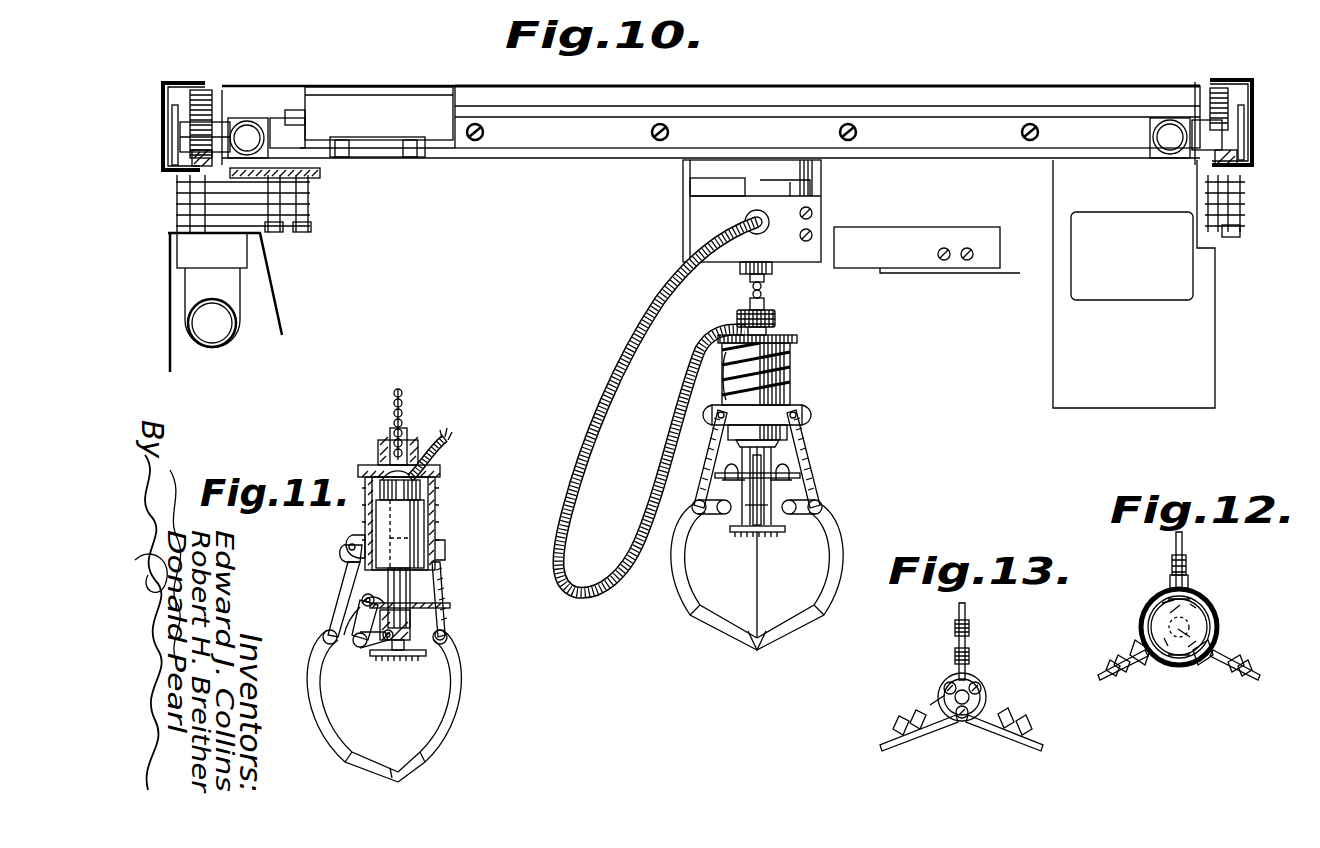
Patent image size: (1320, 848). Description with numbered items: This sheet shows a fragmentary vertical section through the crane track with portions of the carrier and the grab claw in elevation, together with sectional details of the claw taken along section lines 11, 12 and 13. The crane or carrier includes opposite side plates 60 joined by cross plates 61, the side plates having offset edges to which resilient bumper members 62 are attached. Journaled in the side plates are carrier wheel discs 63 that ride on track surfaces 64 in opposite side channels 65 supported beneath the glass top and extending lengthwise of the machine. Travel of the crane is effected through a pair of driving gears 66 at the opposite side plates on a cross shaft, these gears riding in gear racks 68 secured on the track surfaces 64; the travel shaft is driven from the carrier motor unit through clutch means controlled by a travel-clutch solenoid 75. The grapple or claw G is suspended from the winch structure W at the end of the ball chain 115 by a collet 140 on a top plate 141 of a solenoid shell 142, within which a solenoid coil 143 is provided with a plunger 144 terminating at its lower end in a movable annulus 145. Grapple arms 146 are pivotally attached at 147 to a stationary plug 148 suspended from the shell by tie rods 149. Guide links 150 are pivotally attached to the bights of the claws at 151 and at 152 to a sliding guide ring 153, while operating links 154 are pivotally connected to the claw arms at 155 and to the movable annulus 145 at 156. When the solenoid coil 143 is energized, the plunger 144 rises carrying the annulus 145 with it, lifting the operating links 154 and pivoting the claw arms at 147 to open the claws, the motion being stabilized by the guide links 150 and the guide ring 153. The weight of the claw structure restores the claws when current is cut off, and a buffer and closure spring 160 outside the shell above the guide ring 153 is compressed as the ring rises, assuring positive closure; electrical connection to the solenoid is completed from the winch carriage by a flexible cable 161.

In FIG. 10, the side plates 60 is at (232, 120).
In FIG. 10, the cross plates 61 is at (505, 150).
In FIG. 10, the resilient bumper members 62 is at (249, 136).
In FIG. 10, the carrier wheel discs 63 is at (172, 120).
In FIG. 10, the track surfaces 64 is at (175, 168).
In FIG. 10, the side channels 65 is at (163, 93).
In FIG. 10, the driving gears 66 is at (203, 90).
In FIG. 10, the gear racks 68 is at (195, 172).
In FIG. 10, the travel-clutch solenoid 75 is at (378, 147).
In FIG. 10, the ball chain 115 is at (762, 297).
In FIG. 11, the ball chain 115 is at (402, 393).
In FIG. 10, the collet 140 is at (770, 330).
In FIG. 11, the collet 140 is at (410, 450).
In FIG. 10, the top plate 141 is at (797, 340).
In FIG. 11, the top plate 141 is at (440, 472).
In FIG. 10, the solenoid shell 142 is at (790, 372).
In FIG. 11, the solenoid shell 142 is at (430, 490).
In FIG. 11, the solenoid coil 143 is at (418, 505).
In FIG. 10, the plunger 144 is at (770, 455).
In FIG. 11, the plunger 144 is at (400, 580).
In FIG. 10, the movable annulus 145 is at (775, 462).
In FIG. 11, the movable annulus 145 is at (450, 605).
In FIG. 10, the grapple arms 146 is at (757, 608).
In FIG. 11, the grapple arms 146 is at (335, 720).
In FIG. 13, the grapple arms 146 is at (1010, 730).
In FIG. 12, the grapple arms 146 is at (1182, 540).
In FIG. 11, the pivotal attachment 147 is at (385, 645).
In FIG. 13, the pivotal attachment 147 is at (940, 702).
In FIG. 10, the stationary plug 148 is at (745, 538).
In FIG. 11, the stationary plug 148 is at (405, 658).
In FIG. 13, the stationary plug 148 is at (974, 680).
In FIG. 12, the stationary plug 148 is at (1179, 621).
In FIG. 10, the tie rods 149 is at (795, 500).
In FIG. 11, the tie rods 149 is at (375, 590).
In FIG. 13, the tie rods 149 is at (945, 688).
In FIG. 10, the guide links 150 is at (708, 450).
In FIG. 11, the guide links 150 is at (345, 568).
In FIG. 10, the pivotal attachment 151 is at (694, 512).
In FIG. 11, the pivotal attachment 151 is at (325, 640).
In FIG. 13, the pivotal attachment 151 is at (900, 722).
In FIG. 12, the pivotal attachment 151 is at (1118, 652).
In FIG. 10, the pivotal attachment 152 is at (712, 410).
In FIG. 11, the pivotal attachment 152 is at (340, 552).
In FIG. 12, the pivotal attachment 152 is at (1186, 575).
In FIG. 10, the sliding guide ring 153 is at (757, 426).
In FIG. 11, the sliding guide ring 153 is at (358, 540).
In FIG. 12, the sliding guide ring 153 is at (1212, 603).
In FIG. 10, the operating links 154 is at (706, 515).
In FIG. 11, the operating links 154 is at (360, 620).
In FIG. 10, the pivotal connection 155 is at (793, 528).
In FIG. 11, the pivotal connection 155 is at (358, 648).
In FIG. 13, the pivotal connection 155 is at (935, 712).
In FIG. 10, the pivotal connection 156 is at (730, 470).
In FIG. 11, the pivotal connection 156 is at (360, 603).
In FIG. 10, the buffer and closure spring 160 is at (790, 390).
In FIG. 11, the buffer and closure spring 160 is at (440, 522).
In FIG. 10, the flexible cable 161 is at (660, 292).
In FIG. 11, the flexible cable 161 is at (448, 440).
In FIG. 10, the section line 11— 11 is at (777, 293).
In FIG. 10, the section line 12— 12 is at (720, 380).
In FIG. 10, the section line 13— 13 is at (690, 492).
In FIG. 10, the winch structure W is at (670, 230).
In FIG. 10, the grab unit G is at (898, 379).